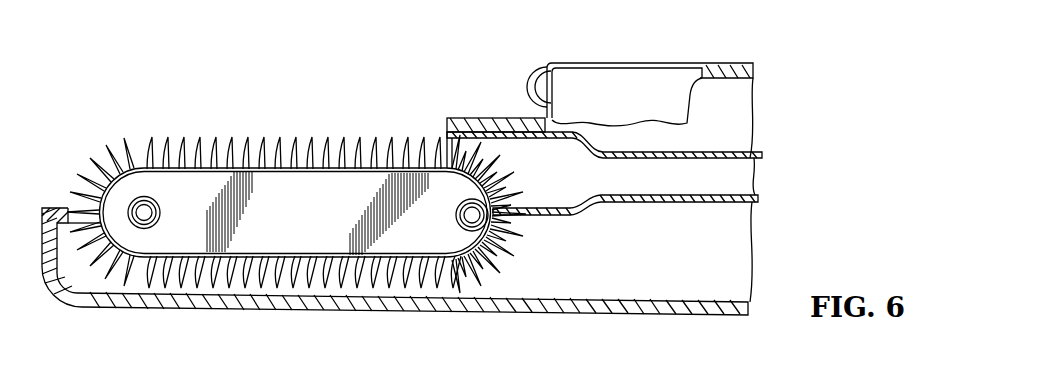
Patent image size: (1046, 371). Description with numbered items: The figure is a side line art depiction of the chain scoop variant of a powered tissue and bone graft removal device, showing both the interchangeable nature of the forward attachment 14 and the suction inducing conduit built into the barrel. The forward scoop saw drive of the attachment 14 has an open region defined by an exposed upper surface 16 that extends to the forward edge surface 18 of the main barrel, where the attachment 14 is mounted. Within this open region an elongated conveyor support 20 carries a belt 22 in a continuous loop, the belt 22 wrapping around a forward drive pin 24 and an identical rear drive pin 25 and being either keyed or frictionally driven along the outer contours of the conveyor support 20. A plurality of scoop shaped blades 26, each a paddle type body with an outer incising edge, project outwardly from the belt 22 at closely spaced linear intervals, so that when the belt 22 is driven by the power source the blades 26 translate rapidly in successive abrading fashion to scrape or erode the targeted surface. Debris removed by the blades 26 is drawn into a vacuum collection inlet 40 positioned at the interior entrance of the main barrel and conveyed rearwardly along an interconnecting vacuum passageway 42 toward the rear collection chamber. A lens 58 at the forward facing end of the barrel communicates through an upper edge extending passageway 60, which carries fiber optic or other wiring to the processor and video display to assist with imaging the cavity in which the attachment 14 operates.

The forward attachment 14 is at (253, 308).
The exposed upper surface 16 is at (62, 206).
The forward edge surface 18 is at (447, 130).
The conveyor support 20 is at (317, 199).
The belt 22 is at (290, 160).
The forward drive pin 24 is at (152, 215).
The rear drive pin 25 is at (490, 220).
The scoop shaped blades 26 is at (123, 147).
The vacuum collection inlet 40 is at (517, 147).
The vacuum passageway 42 is at (660, 163).
The lens 58 is at (540, 78).
The passageway 60 is at (717, 67).